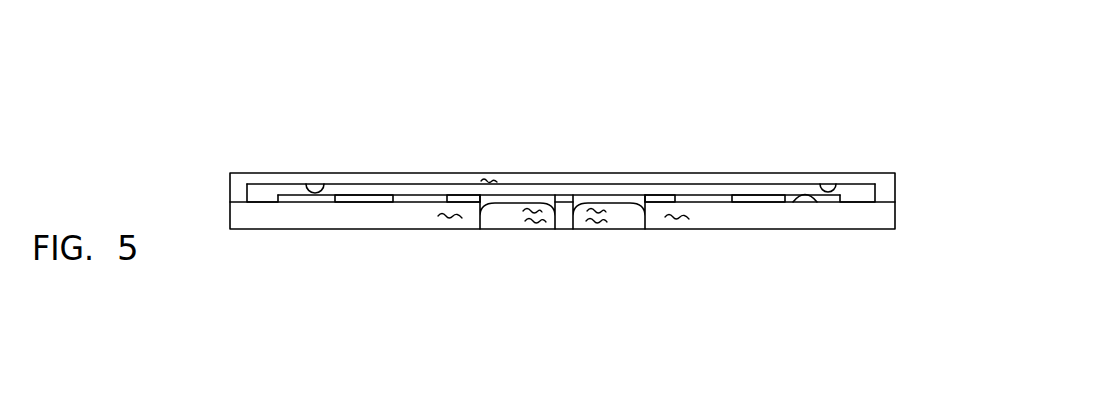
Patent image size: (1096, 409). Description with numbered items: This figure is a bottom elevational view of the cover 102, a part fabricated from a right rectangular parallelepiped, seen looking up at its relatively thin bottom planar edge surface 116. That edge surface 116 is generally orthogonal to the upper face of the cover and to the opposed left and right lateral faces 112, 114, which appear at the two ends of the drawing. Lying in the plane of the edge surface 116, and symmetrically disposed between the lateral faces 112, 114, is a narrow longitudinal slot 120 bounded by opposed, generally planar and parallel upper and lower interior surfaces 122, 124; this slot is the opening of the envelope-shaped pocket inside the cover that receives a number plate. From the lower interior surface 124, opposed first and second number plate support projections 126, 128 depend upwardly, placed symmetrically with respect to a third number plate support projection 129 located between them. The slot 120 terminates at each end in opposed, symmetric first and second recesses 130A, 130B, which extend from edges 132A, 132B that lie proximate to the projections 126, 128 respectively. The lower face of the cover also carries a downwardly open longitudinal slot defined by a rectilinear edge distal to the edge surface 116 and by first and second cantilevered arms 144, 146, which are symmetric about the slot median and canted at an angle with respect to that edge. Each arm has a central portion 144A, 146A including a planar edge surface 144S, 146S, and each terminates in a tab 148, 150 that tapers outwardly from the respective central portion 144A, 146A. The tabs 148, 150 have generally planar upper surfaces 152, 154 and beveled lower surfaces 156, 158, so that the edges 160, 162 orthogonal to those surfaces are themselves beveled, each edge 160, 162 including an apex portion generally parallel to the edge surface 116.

The cover 102 is at (355, 96).
The second lateral face 112 is at (229, 196).
The third lateral face 114 is at (893, 190).
The second planar edge surface 116 is at (491, 177).
The longitudinal slot 120 is at (797, 165).
The first interior surface 122 is at (306, 183).
The second interior surface 124 is at (318, 203).
The first number plate support projection 126 is at (377, 183).
The second number plate support projection 128 is at (763, 195).
The third number plate support projection 129 is at (579, 194).
The first recess 130A is at (255, 183).
The second recess 130B is at (859, 188).
The first edge 132A is at (281, 201).
The second edge 132B is at (839, 200).
The first cantilevered arm 144 is at (420, 246).
The central portion of first arm 144A is at (362, 229).
The planar edge surface of first arm 144S is at (448, 222).
The second cantilevered arm 146 is at (747, 246).
The central portion of second arm 146A is at (789, 203).
The planar edge surface of second arm 146S is at (681, 220).
The first tab 148 is at (498, 229).
The second tab 150 is at (622, 229).
The upper surface of first tab 152 is at (512, 203).
The upper surface of second tab 154 is at (624, 203).
The beveled lower surface of first tab 156 is at (536, 223).
The beveled lower surface of second tab 158 is at (595, 225).
The edge of first tab 160 is at (533, 208).
The edge of second tab 162 is at (598, 208).